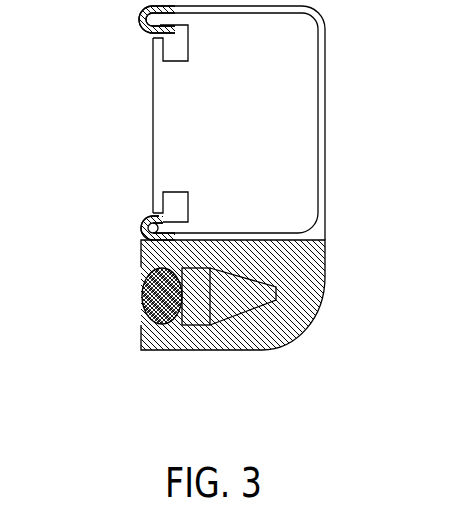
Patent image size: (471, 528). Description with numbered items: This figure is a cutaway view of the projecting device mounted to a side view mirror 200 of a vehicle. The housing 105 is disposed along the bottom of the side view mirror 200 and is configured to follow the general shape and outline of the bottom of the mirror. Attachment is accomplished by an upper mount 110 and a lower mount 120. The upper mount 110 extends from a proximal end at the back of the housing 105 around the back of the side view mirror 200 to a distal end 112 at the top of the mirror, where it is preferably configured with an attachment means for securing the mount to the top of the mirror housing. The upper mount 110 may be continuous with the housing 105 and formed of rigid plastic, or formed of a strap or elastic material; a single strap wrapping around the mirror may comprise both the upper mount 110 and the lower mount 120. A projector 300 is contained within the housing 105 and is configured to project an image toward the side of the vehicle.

The housing 105 is at (187, 350).
The upper mount 110 is at (326, 29).
The distal end 112 is at (138, 16).
The lower mount 120 is at (136, 223).
The side view mirror 200 is at (323, 134).
The projector 300 is at (142, 283).